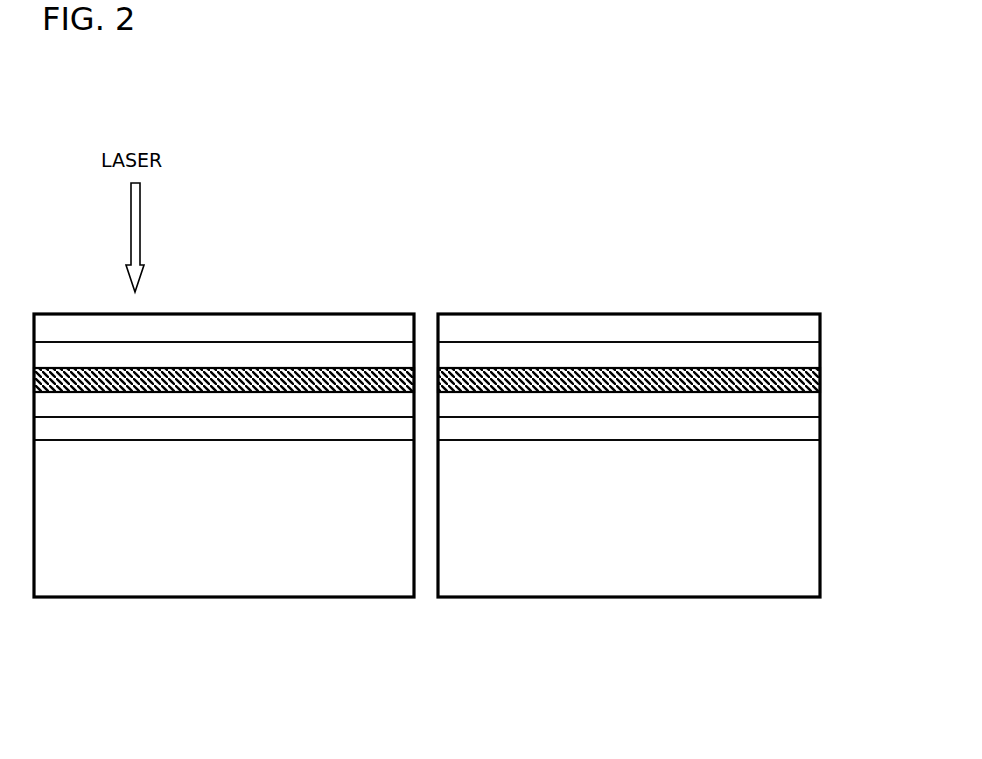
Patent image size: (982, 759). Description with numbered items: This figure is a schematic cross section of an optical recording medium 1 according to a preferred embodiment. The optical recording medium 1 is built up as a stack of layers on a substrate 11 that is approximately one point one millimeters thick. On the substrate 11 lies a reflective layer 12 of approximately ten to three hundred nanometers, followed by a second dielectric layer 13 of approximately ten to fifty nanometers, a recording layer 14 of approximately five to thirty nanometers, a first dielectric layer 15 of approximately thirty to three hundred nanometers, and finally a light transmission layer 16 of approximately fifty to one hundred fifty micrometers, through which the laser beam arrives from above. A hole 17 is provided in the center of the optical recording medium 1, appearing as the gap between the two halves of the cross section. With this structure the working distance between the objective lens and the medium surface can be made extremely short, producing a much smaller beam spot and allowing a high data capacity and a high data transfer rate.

The optical recording medium 1 is at (638, 176).
The substrate 11 is at (822, 515).
The reflective layer 12 is at (822, 427).
The second dielectric layer 13 is at (822, 402).
The recording layer 14 is at (822, 377).
The first dielectric layer 15 is at (822, 352).
The light transmission layer 16 is at (822, 327).
The hole 17 is at (426, 606).